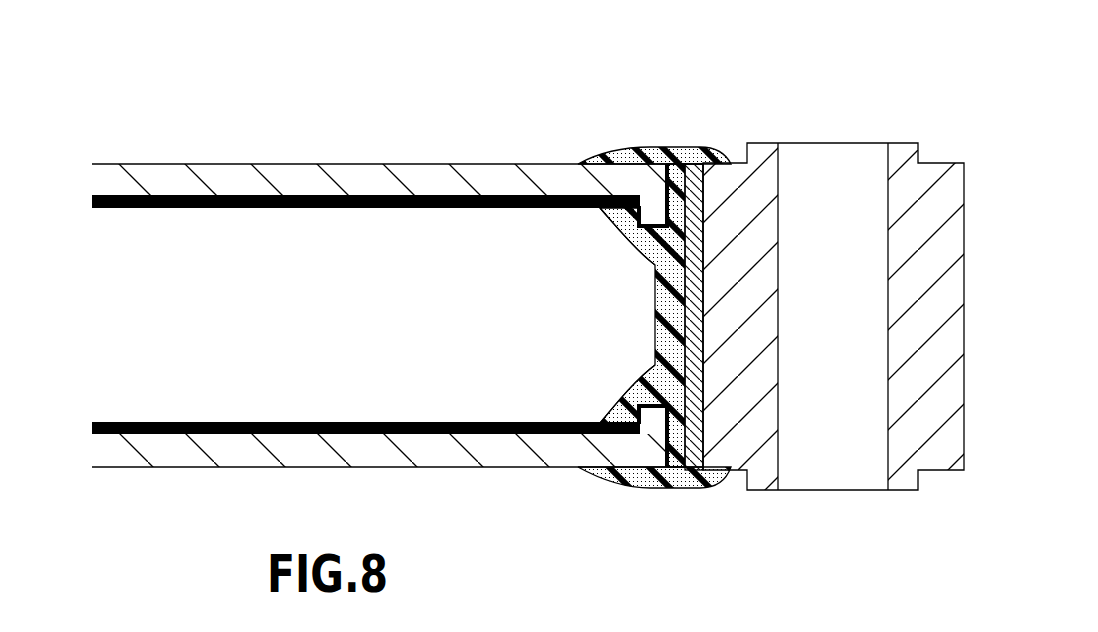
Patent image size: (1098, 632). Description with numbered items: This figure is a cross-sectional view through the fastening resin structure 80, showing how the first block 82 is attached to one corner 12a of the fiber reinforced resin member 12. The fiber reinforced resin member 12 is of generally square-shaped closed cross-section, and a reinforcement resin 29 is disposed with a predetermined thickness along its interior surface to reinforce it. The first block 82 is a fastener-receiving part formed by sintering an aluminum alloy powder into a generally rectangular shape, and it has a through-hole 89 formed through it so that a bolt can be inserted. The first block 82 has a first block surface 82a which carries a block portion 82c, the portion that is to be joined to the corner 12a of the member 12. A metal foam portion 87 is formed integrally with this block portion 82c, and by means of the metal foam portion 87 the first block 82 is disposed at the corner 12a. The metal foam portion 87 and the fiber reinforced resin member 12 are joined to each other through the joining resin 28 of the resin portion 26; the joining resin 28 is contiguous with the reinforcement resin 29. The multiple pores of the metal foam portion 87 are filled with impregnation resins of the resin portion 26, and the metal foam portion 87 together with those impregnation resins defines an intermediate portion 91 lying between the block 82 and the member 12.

The fastening resin structure 80 is at (412, 239).
The fiber reinforced resin member 12 is at (290, 163).
The one corner 12a is at (655, 183).
The reinforcement resin 29 is at (334, 210).
The resin portion 26 is at (661, 142).
The joining resin 28 is at (618, 227).
The metal foam portion 87 is at (655, 333).
The intermediate portion 91 is at (697, 197).
The first block 82 is at (863, 359).
The first block surface 82a is at (668, 386).
The block portion 82c is at (652, 270).
The through-hole 89 is at (888, 413).